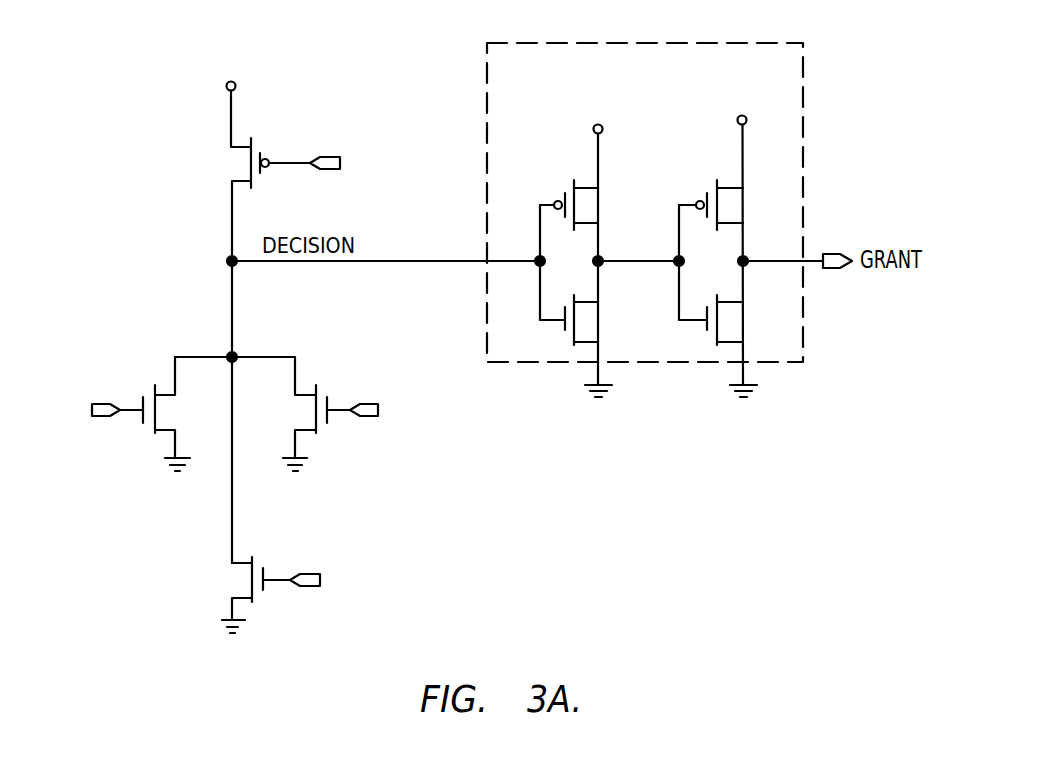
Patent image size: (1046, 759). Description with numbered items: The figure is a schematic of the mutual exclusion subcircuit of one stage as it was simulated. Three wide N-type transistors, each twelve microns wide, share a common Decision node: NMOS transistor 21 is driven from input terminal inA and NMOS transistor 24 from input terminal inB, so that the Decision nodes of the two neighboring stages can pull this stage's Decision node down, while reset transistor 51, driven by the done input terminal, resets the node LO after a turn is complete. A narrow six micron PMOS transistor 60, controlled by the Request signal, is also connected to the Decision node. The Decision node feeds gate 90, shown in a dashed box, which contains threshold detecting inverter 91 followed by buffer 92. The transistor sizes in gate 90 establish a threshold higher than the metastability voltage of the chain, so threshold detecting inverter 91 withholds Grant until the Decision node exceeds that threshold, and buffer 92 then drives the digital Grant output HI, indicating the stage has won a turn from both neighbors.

The narrow PMOS transistor 60 is at (222, 177).
The NMOS transistor 21 is at (174, 420).
The NMOS transistor 24 is at (322, 423).
The reset transistor 51 is at (230, 592).
The gate 90 is at (803, 48).
The threshold detecting inverter 91 is at (622, 192).
The buffer 92 is at (753, 205).